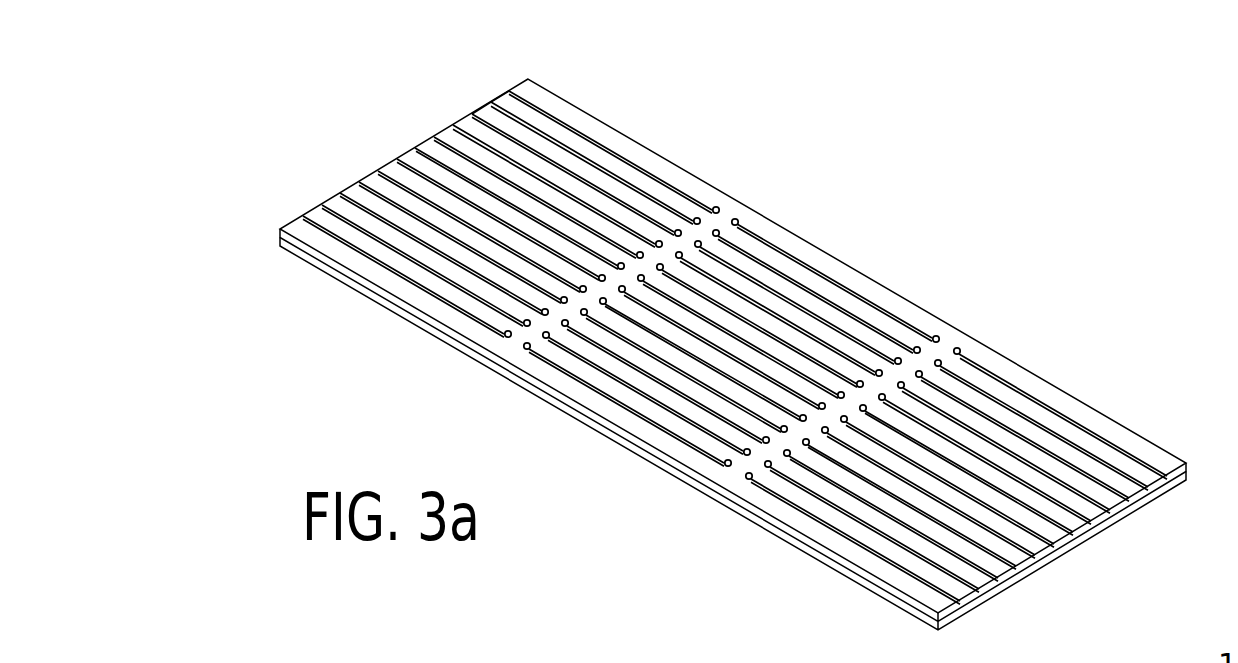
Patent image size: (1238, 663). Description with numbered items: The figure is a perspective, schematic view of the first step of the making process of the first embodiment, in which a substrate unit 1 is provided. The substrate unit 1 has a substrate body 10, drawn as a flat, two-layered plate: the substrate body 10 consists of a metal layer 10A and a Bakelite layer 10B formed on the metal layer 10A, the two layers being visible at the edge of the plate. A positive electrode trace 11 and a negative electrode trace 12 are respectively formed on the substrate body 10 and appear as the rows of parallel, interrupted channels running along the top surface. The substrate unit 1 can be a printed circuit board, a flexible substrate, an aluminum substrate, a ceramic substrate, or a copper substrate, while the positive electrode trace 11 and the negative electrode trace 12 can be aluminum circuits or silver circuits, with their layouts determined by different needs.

The substrate unit 1 is at (435, 33).
The substrate body 10 is at (273, 104).
The metal layer 10A is at (280, 235).
The Bakelite layer 10B is at (294, 243).
The positive electrode trace 11 is at (500, 117).
The negative electrode trace 12 is at (512, 95).